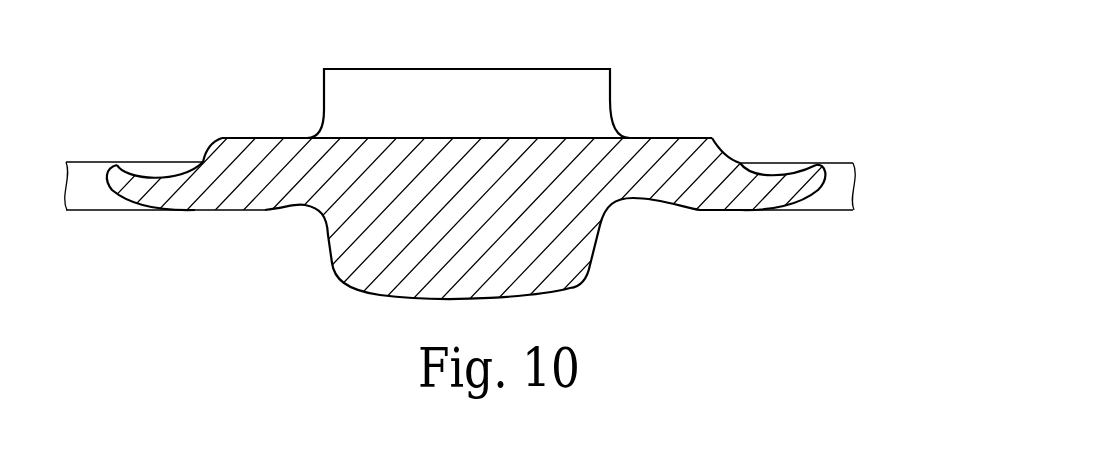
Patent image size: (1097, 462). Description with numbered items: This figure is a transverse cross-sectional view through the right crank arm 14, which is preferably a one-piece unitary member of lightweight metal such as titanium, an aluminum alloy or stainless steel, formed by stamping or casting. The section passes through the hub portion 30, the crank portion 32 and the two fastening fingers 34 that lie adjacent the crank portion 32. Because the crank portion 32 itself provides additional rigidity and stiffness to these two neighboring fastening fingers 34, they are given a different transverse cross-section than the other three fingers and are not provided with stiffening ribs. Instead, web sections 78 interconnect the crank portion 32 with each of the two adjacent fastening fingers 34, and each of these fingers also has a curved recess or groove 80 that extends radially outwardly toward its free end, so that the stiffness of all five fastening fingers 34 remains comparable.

The right crank arm 14 is at (863, 130).
The hub portion 30 is at (613, 107).
The crank portion 32 is at (570, 290).
The fastening fingers 34 is at (207, 211).
The web sections 78 is at (255, 138).
The curved recess or groove 80 is at (160, 178).